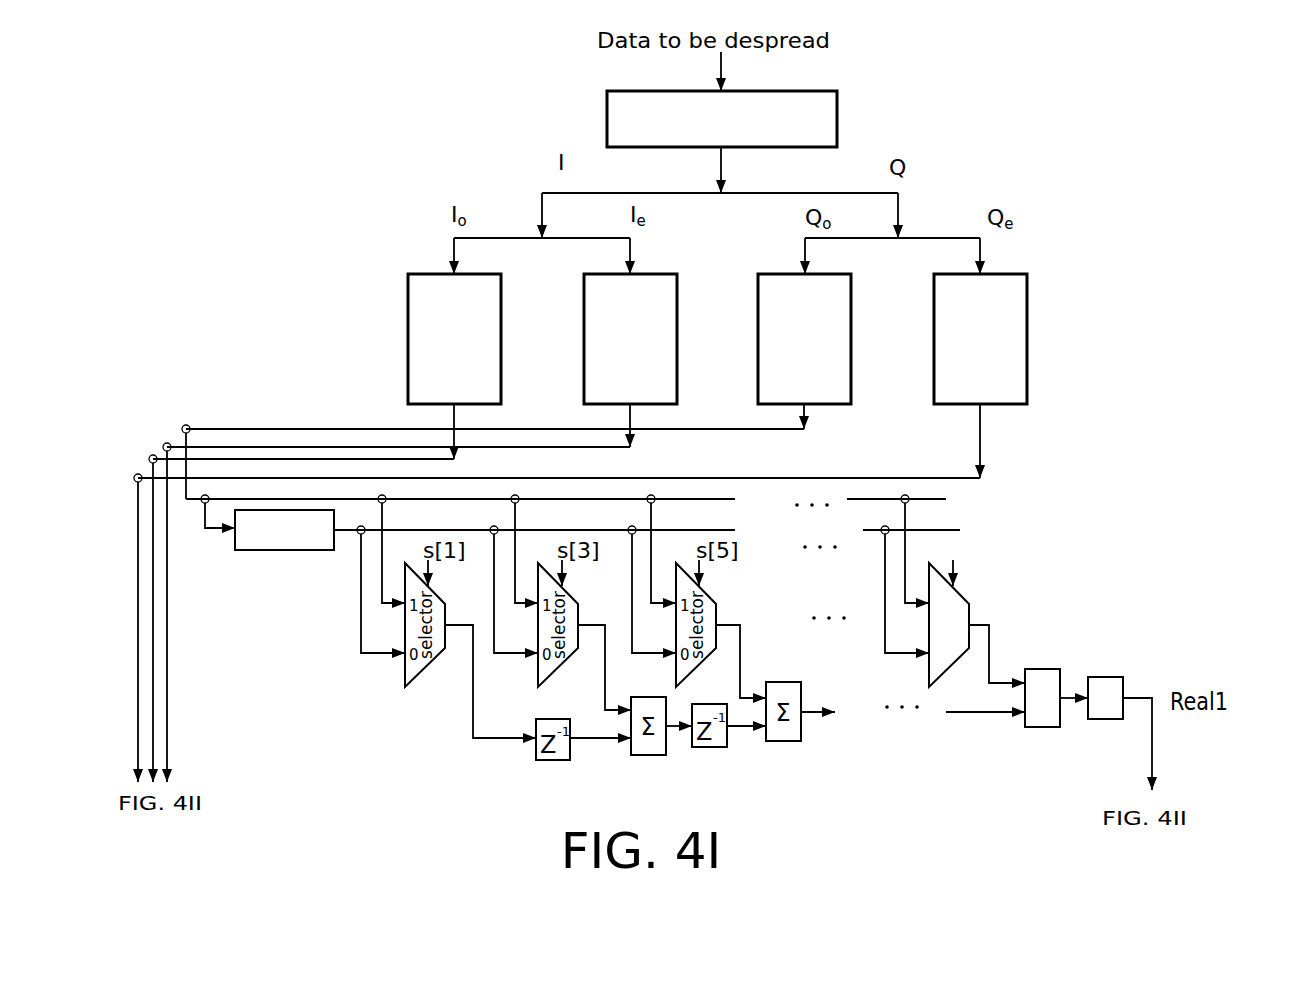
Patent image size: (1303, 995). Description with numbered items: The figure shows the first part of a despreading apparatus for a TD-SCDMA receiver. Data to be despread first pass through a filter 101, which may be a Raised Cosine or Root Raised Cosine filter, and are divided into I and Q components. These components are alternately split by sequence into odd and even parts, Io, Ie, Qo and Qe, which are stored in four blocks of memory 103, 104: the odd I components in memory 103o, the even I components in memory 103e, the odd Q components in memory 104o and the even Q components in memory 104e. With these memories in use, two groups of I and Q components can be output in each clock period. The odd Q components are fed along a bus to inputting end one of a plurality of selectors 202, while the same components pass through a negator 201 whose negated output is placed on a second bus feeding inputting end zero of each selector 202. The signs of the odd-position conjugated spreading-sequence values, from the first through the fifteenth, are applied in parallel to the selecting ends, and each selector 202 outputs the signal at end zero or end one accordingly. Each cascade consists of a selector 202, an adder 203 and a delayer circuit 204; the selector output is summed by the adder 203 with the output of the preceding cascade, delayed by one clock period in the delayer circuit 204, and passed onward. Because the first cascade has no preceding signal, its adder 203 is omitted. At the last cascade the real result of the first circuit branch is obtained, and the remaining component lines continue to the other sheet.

The filter 101 is at (837, 118).
The memory blocks for I components 103 is at (573, 325).
The memory for odd I components 103o is at (501, 293).
The memory for even I components 103e is at (677, 293).
The memory blocks for Q components 104 is at (922, 325).
The memory for odd Q components 104o is at (851, 293).
The memory for even Q components 104e is at (1027, 293).
The negator 201 is at (276, 550).
The selector 202 is at (969, 603).
The adder 203 is at (1043, 669).
The delayer circuit 204 is at (1104, 677).